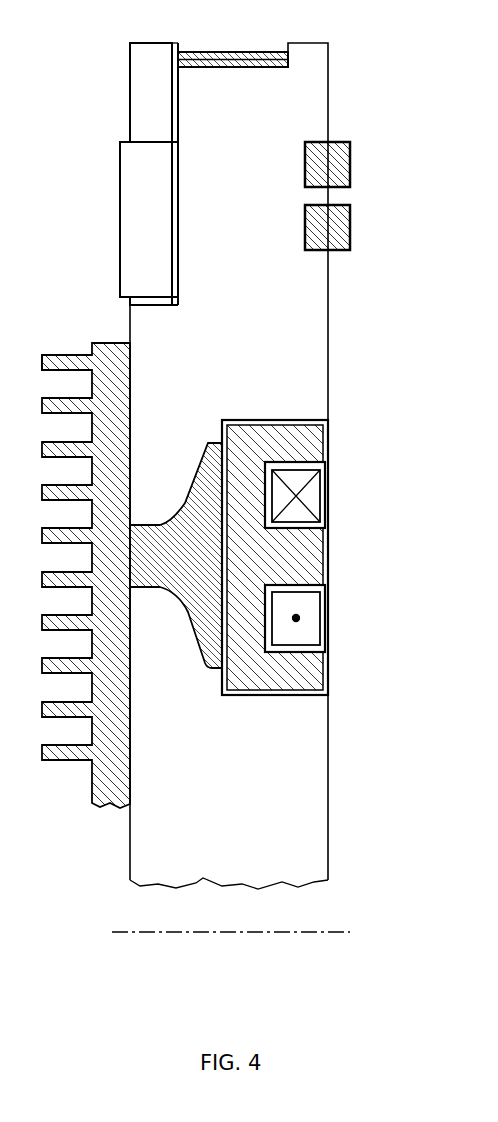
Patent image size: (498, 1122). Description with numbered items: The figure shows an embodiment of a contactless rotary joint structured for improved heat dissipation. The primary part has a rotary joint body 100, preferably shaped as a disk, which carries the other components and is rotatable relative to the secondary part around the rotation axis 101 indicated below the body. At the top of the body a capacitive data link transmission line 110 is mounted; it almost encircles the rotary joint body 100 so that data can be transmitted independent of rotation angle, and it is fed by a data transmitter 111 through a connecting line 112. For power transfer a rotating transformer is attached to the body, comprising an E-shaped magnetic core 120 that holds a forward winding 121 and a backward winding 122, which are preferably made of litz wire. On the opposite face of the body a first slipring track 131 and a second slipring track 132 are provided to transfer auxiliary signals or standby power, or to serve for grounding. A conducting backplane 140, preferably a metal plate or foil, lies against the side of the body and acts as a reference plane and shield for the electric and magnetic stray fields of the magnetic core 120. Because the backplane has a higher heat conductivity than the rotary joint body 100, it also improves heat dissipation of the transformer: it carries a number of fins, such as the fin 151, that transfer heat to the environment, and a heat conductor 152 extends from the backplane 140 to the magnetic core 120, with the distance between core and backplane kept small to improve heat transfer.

The rotary joint body 100 is at (318, 773).
The rotation axis 101 is at (245, 934).
The capacitive data link transmission line 110 is at (233, 51).
The data transmitter 111 is at (130, 215).
The connecting line 112 is at (178, 100).
The magnetic core 120 is at (266, 697).
The forward winding 121 is at (312, 492).
The backward winding 122 is at (305, 617).
The first slipring track 131 is at (350, 163).
The second slipring track 132 is at (350, 227).
The conducting backplane 140 is at (100, 432).
The fin 151 is at (65, 356).
The heat conductor 152 is at (197, 477).